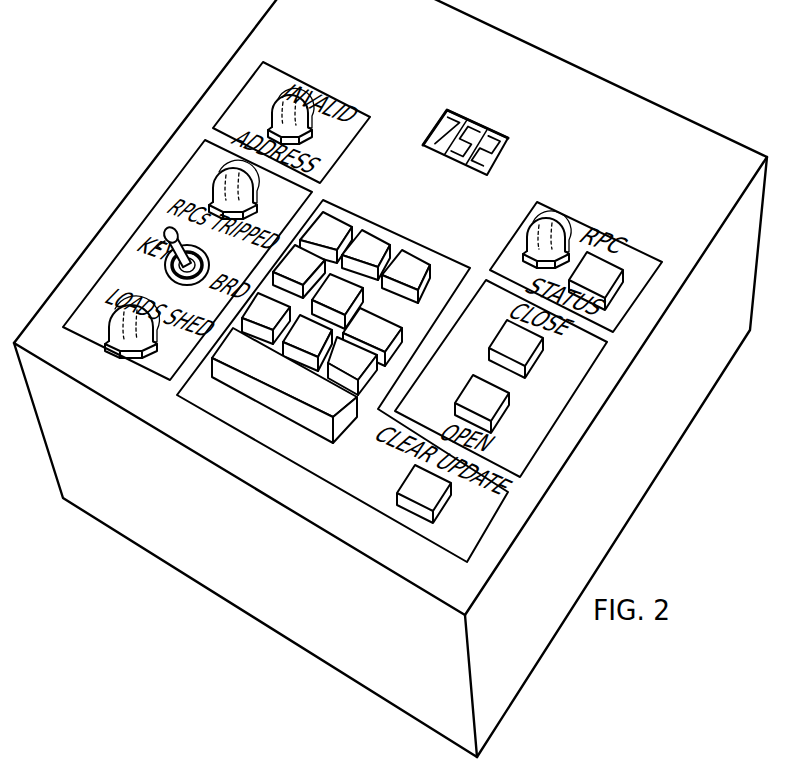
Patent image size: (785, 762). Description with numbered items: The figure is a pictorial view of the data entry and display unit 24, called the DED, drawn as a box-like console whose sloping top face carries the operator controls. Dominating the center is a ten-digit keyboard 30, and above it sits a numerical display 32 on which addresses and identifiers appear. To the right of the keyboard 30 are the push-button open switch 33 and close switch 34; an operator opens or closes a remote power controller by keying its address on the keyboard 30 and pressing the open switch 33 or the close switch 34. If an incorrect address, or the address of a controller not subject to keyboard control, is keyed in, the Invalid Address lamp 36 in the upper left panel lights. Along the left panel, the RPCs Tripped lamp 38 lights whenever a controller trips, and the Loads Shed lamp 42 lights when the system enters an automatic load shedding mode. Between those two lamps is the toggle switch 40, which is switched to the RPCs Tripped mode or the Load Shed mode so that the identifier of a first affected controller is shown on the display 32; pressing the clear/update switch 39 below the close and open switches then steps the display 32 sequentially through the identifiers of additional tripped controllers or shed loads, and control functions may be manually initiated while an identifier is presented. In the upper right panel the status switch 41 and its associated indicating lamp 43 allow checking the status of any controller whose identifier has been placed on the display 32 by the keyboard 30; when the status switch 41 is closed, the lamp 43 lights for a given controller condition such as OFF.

The data entry and display unit 24 is at (564, 696).
The keyboard 30 is at (226, 369).
The numerical display 32 is at (481, 121).
The open switch 33 is at (484, 404).
The close switch 34 is at (502, 343).
The Invalid Address lamp 36 is at (276, 108).
The RPCs Tripped lamp 38 is at (219, 176).
The clear/update switch 39 is at (404, 488).
The toggle switch 40 is at (179, 233).
The status switch 41 is at (613, 268).
The Loads Shed lamp 42 is at (110, 325).
The status indicating lamp 43 is at (546, 223).